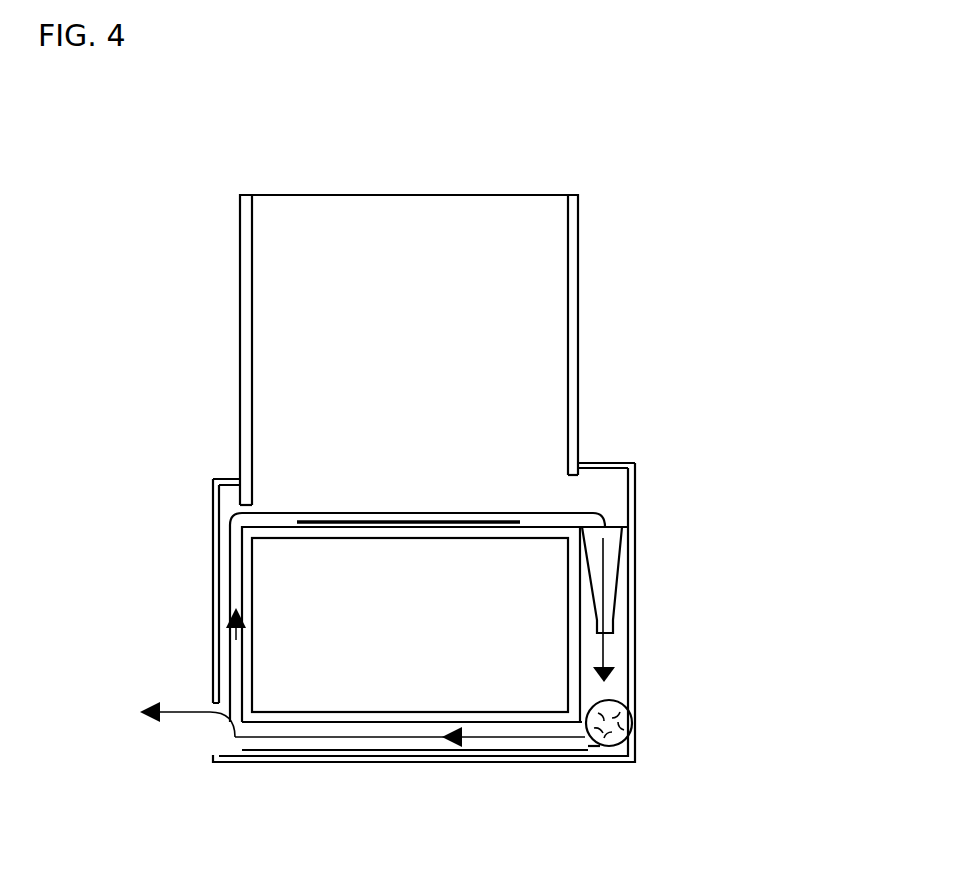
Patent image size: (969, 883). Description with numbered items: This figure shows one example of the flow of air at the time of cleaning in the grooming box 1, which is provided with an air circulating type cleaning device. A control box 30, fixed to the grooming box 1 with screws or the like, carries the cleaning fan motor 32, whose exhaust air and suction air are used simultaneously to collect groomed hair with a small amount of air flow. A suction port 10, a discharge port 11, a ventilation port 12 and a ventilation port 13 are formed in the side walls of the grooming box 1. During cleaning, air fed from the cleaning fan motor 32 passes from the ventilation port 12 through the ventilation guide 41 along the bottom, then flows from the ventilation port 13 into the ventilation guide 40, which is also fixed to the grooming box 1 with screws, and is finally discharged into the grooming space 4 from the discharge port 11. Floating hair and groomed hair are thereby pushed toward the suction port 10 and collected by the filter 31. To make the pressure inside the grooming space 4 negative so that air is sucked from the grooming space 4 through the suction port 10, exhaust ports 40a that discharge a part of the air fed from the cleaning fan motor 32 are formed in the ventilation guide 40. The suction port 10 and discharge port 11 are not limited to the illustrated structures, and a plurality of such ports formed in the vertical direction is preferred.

The grooming box 1 is at (583, 277).
The grooming space 4 is at (333, 400).
The suction port 10 is at (583, 493).
The discharge port 11 is at (237, 513).
The ventilation port 12 is at (588, 743).
The ventilation port 13 is at (245, 745).
The control box 30 is at (637, 633).
The filter 31 is at (612, 585).
The cleaning fan motor 32 is at (636, 716).
The ventilation guide 40 is at (212, 592).
The exhaust port 40a is at (212, 716).
The ventilation guide 41 is at (420, 742).